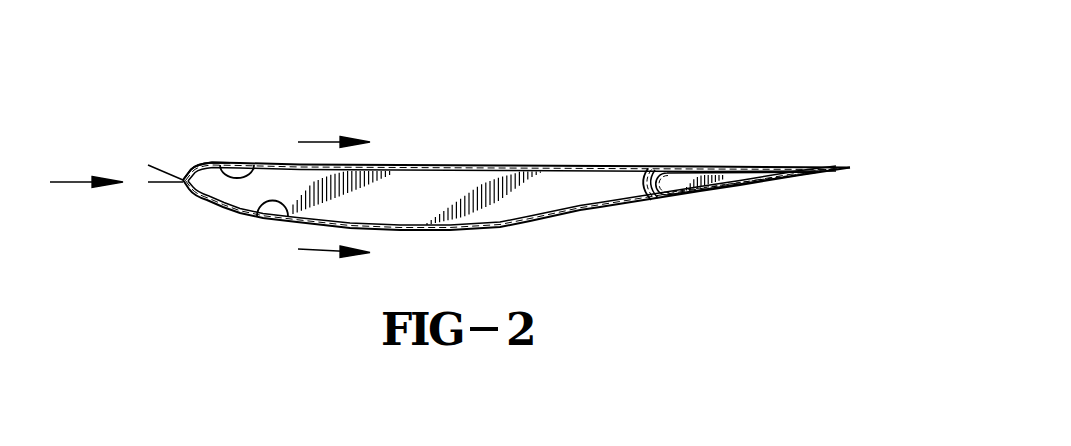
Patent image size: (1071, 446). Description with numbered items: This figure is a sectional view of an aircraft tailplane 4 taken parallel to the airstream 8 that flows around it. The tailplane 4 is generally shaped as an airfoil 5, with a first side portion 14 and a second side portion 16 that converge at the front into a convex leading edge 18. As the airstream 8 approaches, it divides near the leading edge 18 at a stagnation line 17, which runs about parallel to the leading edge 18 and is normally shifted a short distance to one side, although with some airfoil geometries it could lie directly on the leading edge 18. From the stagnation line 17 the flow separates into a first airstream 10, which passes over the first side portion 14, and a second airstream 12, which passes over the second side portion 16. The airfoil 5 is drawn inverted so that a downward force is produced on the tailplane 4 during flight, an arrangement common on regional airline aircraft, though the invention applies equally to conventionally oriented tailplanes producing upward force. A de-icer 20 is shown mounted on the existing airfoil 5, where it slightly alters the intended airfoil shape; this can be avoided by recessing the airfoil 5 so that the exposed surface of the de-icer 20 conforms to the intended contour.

The tailplane 4 is at (527, 166).
The airfoil 5 is at (528, 224).
The airstream 8 is at (72, 182).
The first airstream 10 is at (312, 251).
The second airstream 12 is at (313, 142).
The first side portion 14 is at (291, 219).
The second side portion 16 is at (254, 167).
The stagnation line 17 is at (157, 164).
The leading edge 18 is at (156, 184).
The de-icer 20 is at (204, 163).